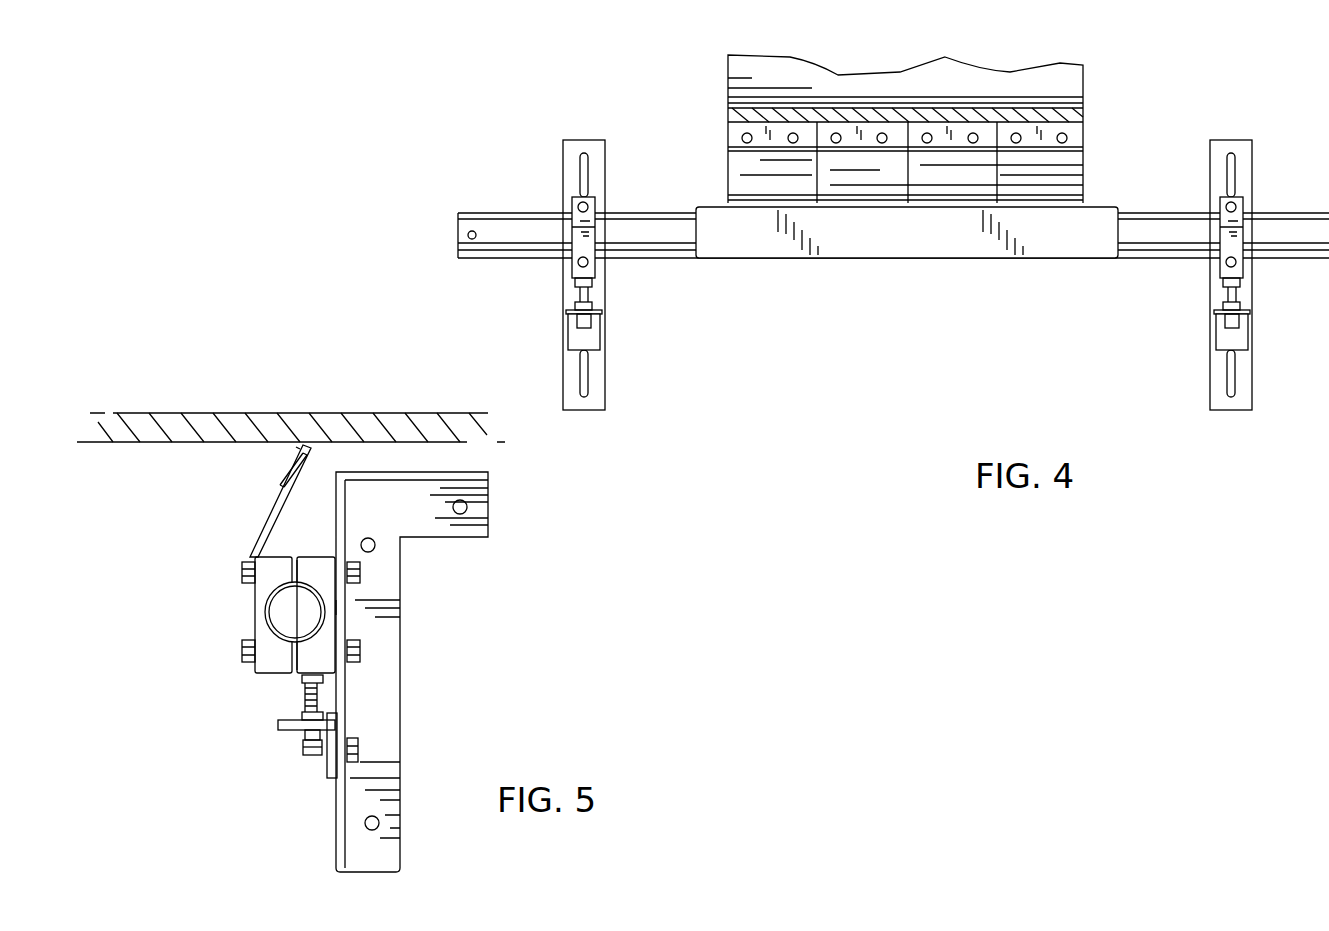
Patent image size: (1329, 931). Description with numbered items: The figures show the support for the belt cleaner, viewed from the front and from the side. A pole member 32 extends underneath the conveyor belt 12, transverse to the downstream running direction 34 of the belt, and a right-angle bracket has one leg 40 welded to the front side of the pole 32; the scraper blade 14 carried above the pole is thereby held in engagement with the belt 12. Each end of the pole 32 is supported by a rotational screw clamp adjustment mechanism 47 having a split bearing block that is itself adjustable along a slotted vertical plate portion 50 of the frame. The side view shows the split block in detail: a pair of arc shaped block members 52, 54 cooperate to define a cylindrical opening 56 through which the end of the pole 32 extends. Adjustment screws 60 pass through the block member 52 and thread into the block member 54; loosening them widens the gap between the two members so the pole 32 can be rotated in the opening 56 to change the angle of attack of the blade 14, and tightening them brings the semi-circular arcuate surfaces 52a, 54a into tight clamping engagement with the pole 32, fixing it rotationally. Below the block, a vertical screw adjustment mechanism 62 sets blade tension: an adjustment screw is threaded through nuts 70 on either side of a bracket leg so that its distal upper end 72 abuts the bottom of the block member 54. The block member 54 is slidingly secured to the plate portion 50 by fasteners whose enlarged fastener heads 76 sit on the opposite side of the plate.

In FIG. 4, the conveyor belt 12 is at (985, 78).
In FIG. 5, the conveyor belt 12 is at (262, 420).
In FIG. 4, the scraper blade 14 is at (728, 135).
In FIG. 4, the pole member 32 is at (1165, 205).
In FIG. 4, the bracket leg 40 is at (885, 235).
In FIG. 4, the slotted vertical plate portion 50 is at (593, 405).
In FIG. 5, the downstream running direction 34 is at (128, 467).
In FIG. 5, the rotational screw clamp adjustment mechanism 47 is at (306, 517).
In FIG. 5, the arc shaped block member 52 is at (265, 668).
In FIG. 5, the semi-circular arcuate surface 52a is at (265, 612).
In FIG. 5, the arc shaped block member 54 is at (335, 630).
In FIG. 5, the semi-circular arcuate surface 54a is at (330, 605).
In FIG. 5, the cylindrical opening 56 is at (303, 557).
In FIG. 5, the adjustment screws 60 is at (242, 572).
In FIG. 5, the vertical screw adjustment mechanism 62 is at (275, 745).
In FIG. 5, the nuts 70 is at (302, 735).
In FIG. 5, the distal upper end 72 is at (322, 678).
In FIG. 5, the enlarged fastener heads 76 is at (357, 568).